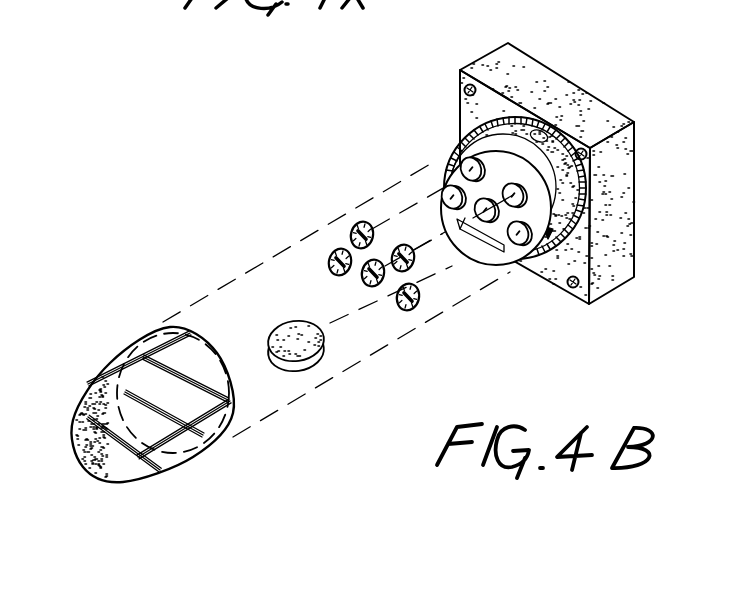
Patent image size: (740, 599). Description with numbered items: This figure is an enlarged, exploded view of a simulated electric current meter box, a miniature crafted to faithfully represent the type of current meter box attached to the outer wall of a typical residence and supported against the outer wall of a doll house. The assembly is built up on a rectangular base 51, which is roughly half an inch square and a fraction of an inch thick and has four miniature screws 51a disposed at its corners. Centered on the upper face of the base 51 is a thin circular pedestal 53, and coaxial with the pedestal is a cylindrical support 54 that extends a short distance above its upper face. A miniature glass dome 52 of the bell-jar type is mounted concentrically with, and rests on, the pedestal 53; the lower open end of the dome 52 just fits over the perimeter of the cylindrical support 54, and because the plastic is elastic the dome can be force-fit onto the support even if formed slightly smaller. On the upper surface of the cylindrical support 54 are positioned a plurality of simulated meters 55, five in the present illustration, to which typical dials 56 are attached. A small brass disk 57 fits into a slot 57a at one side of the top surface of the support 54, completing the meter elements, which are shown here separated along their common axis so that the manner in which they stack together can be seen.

The rectangular base 51 is at (520, 80).
The miniature screws 51a is at (572, 284).
The miniature glass dome 52 is at (76, 450).
The circular pedestal 53 is at (550, 134).
The cylindrical support 54 is at (548, 231).
The simulated meters 55 is at (471, 169).
The dials 56 is at (331, 252).
The brass disk 57 is at (271, 332).
The slot 57a is at (496, 240).